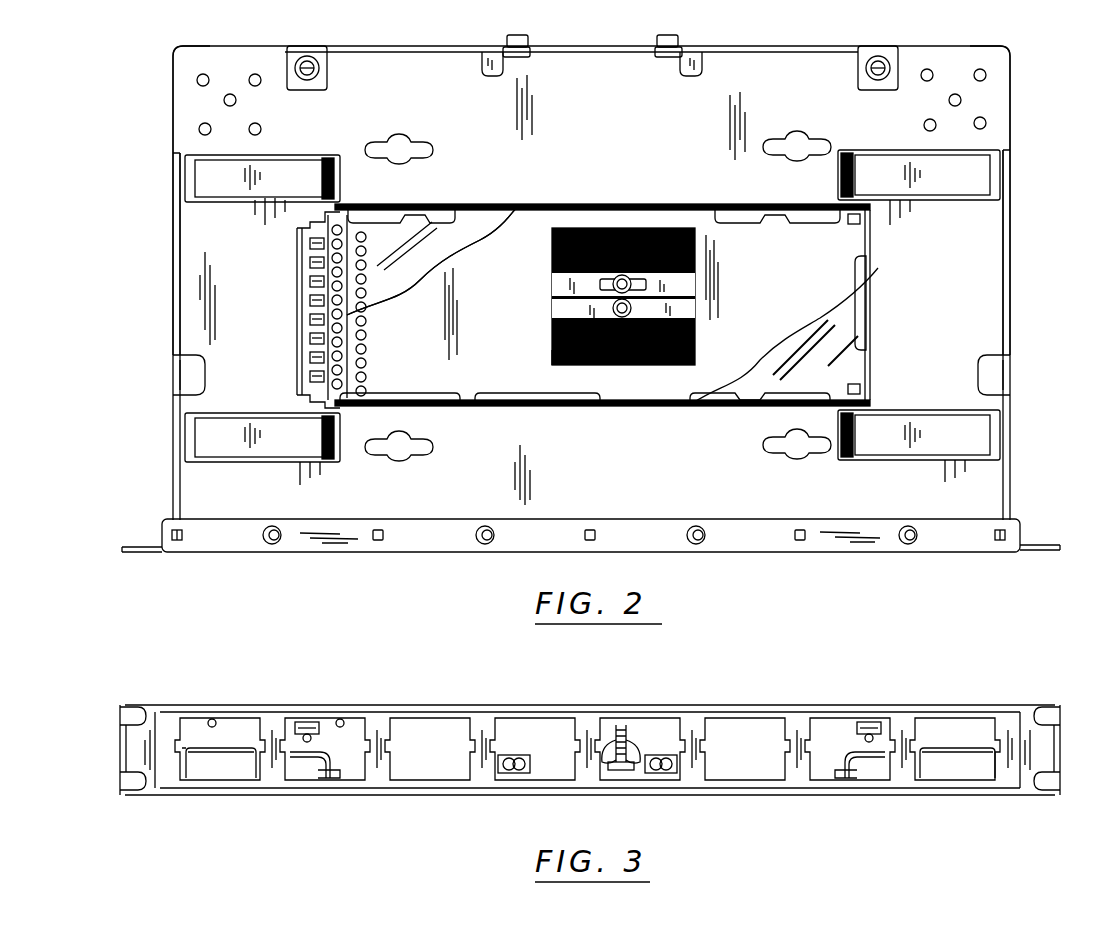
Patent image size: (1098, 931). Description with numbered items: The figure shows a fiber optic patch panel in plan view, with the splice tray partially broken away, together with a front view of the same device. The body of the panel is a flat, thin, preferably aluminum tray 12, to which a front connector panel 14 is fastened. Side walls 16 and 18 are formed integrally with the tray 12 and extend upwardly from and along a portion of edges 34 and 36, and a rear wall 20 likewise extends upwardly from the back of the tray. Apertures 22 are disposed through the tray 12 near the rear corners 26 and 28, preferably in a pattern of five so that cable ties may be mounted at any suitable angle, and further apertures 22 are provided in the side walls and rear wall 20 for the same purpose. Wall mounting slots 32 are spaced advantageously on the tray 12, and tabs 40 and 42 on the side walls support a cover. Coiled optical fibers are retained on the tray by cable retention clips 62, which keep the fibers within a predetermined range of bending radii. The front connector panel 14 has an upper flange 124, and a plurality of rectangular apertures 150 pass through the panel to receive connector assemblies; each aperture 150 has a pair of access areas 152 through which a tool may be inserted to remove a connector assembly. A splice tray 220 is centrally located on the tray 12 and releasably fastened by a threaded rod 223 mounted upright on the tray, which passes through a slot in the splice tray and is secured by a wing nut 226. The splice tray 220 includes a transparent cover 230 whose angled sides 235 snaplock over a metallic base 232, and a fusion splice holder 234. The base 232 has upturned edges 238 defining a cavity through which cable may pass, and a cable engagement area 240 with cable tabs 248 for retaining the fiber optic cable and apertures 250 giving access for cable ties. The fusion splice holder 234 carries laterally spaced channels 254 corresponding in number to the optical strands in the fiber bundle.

In FIG. 2, the tray 12 is at (632, 142).
In FIG. 2, the front connector panel 14 is at (591, 551).
In FIG. 3, the front connector panel 14 is at (590, 748).
In FIG. 2, the side wall 16 is at (1012, 270).
In FIG. 2, the side wall 18 is at (172, 273).
In FIG. 2, the rear wall 20 is at (576, 46).
In FIG. 2, the apertures 22 is at (232, 94).
In FIG. 2, the rear corner 26 is at (1012, 52).
In FIG. 2, the rear corner 28 is at (180, 50).
In FIG. 2, the wall mounting slots 32 is at (395, 141).
In FIG. 2, the edge 34 is at (1012, 120).
In FIG. 2, the edge 36 is at (173, 105).
In FIG. 2, the tab 40 is at (1005, 372).
In FIG. 2, the tab 42 is at (178, 370).
In FIG. 2, the cable retention clips 62 is at (291, 153).
In FIG. 2, the upper flange 124 is at (752, 547).
In FIG. 3, the rectangular apertures 150 is at (213, 718).
In FIG. 3, the access areas 152 is at (192, 745).
In FIG. 2, the splice tray 220 is at (557, 306).
In FIG. 3, the threaded rod 223 is at (621, 722).
In FIG. 2, the wing nut 226 is at (648, 284).
In FIG. 3, the wing nut 226 is at (660, 752).
In FIG. 2, the cover 230 is at (450, 206).
In FIG. 2, the base 232 is at (506, 284).
In FIG. 2, the fusion splice holder 234 is at (697, 250).
In FIG. 2, the angled sides 235 is at (378, 204).
In FIG. 2, the upturned edges 238 is at (752, 204).
In FIG. 2, the cable engagement area 240 is at (334, 310).
In FIG. 2, the cable tabs 248 is at (310, 281).
In FIG. 2, the apertures 250 is at (368, 362).
In FIG. 2, the channels 254 is at (552, 350).